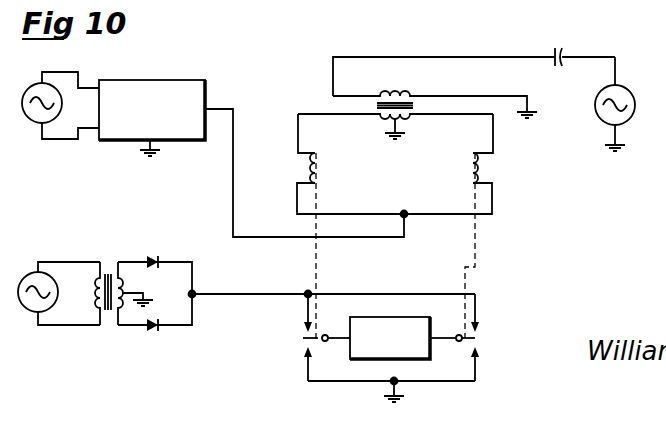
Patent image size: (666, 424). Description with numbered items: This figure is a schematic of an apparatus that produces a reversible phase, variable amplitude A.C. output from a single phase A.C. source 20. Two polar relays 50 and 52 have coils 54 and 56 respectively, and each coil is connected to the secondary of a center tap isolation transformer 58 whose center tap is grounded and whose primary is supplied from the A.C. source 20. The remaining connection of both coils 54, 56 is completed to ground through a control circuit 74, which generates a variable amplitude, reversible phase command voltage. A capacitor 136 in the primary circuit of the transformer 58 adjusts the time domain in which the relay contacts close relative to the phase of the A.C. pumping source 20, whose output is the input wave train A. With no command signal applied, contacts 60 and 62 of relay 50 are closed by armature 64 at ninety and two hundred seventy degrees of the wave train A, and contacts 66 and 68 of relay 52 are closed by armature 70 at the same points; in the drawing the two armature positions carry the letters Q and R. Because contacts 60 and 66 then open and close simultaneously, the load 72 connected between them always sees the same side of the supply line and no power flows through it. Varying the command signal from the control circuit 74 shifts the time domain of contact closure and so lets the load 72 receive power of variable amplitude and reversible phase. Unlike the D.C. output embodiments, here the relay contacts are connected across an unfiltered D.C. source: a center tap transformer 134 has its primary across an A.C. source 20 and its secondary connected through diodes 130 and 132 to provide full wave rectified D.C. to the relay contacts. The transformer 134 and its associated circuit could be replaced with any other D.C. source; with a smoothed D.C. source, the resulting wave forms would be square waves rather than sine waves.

The single phase A.C. source 20 is at (31, 85).
The control circuit 74 is at (150, 86).
The center tap isolation transformer 58 is at (367, 104).
The capacitor 136 is at (561, 52).
The input A.C. wave train A is at (617, 57).
The polar relay 50 is at (318, 150).
The polar relay 52 is at (470, 147).
The coil 54 is at (320, 171).
The coil 56 is at (468, 171).
The center tap transformer 134 is at (108, 265).
The diode 130 is at (153, 257).
The diode 132 is at (152, 330).
The relay contact 60 is at (307, 307).
The relay contact 62 is at (306, 367).
The armature 64 is at (305, 340).
The contact 66 is at (478, 303).
The contact 68 is at (478, 360).
The armature 70 is at (476, 343).
The load 72 is at (432, 347).
The switch Q is at (327, 333).
The switch R is at (455, 335).